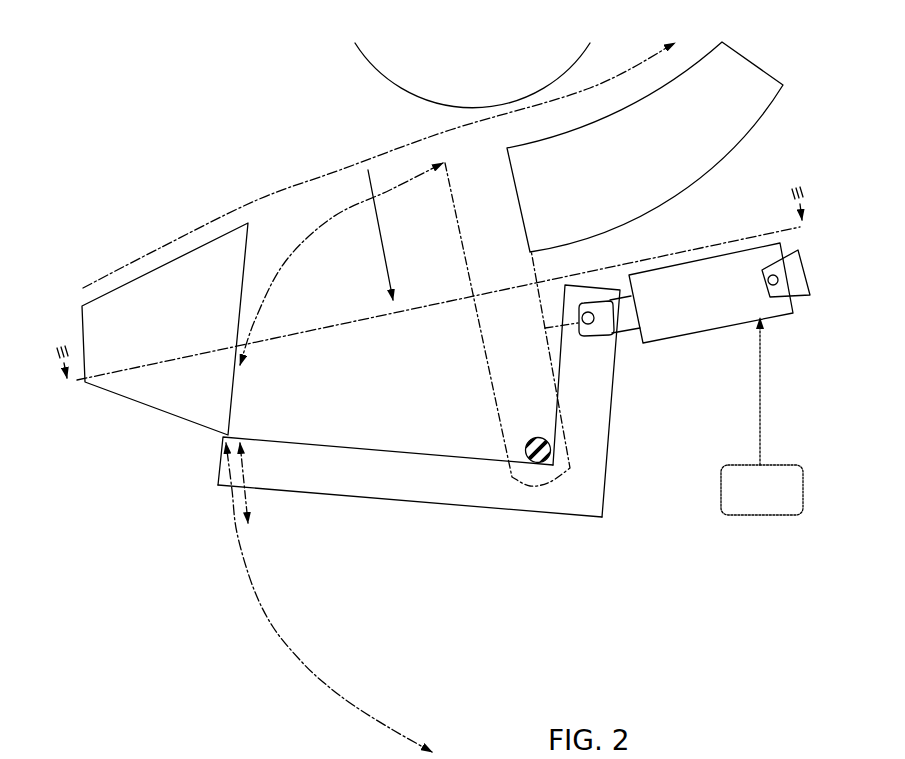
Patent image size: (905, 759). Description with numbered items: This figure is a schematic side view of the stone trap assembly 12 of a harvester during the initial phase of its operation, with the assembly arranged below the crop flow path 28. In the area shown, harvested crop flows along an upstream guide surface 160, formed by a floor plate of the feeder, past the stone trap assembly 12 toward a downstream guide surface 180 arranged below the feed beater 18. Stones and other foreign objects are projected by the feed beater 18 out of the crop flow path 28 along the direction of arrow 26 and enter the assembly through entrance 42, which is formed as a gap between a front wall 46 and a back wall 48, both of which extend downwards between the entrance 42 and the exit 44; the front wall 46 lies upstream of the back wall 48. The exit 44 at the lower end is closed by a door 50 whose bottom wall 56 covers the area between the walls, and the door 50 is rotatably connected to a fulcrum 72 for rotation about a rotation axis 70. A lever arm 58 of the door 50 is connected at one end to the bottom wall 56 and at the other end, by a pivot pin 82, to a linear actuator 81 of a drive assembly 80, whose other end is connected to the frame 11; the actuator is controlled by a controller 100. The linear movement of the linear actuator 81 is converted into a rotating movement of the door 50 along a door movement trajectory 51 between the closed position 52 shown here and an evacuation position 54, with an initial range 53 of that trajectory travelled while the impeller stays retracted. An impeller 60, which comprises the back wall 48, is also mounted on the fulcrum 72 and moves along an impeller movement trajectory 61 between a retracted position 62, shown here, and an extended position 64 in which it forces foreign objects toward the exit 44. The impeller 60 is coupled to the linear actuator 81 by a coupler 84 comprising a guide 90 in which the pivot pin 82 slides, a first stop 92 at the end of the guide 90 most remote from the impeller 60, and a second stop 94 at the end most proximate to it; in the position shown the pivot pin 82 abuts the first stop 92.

The frame 11 is at (806, 302).
The stone trap assembly 12 is at (365, 401).
The feed beater 18 is at (375, 58).
The arrow 26 is at (377, 228).
The crop flow path 28 is at (340, 170).
The entrance 42 is at (331, 205).
The exit 44 is at (474, 324).
The front wall 46 is at (233, 410).
The back wall 48 is at (474, 327).
The door 50 is at (433, 428).
The door movement trajectory 51 is at (317, 673).
The closed position 52 is at (205, 445).
The initial range 53 is at (244, 500).
The evacuation position 54 is at (442, 745).
The bottom wall 56 is at (365, 488).
The lever arm 58 is at (592, 392).
The impeller 60 is at (524, 273).
The impeller movement trajectory 61 is at (272, 291).
The retracted position 62 is at (438, 174).
The extended position 64 is at (248, 370).
The rotation axis 70 is at (553, 450).
The fulcrum 72 is at (530, 440).
The drive assembly 80 is at (649, 293).
The linear actuator 81 is at (698, 315).
The pivot pin 82 is at (600, 278).
The coupler 84 is at (556, 303).
The guide 90 is at (563, 341).
The first stop 92 is at (604, 323).
The second stop 94 is at (541, 318).
The controller 100 is at (754, 502).
The upstream guide surface 160 is at (195, 247).
The downstream guide surface 180 is at (588, 120).